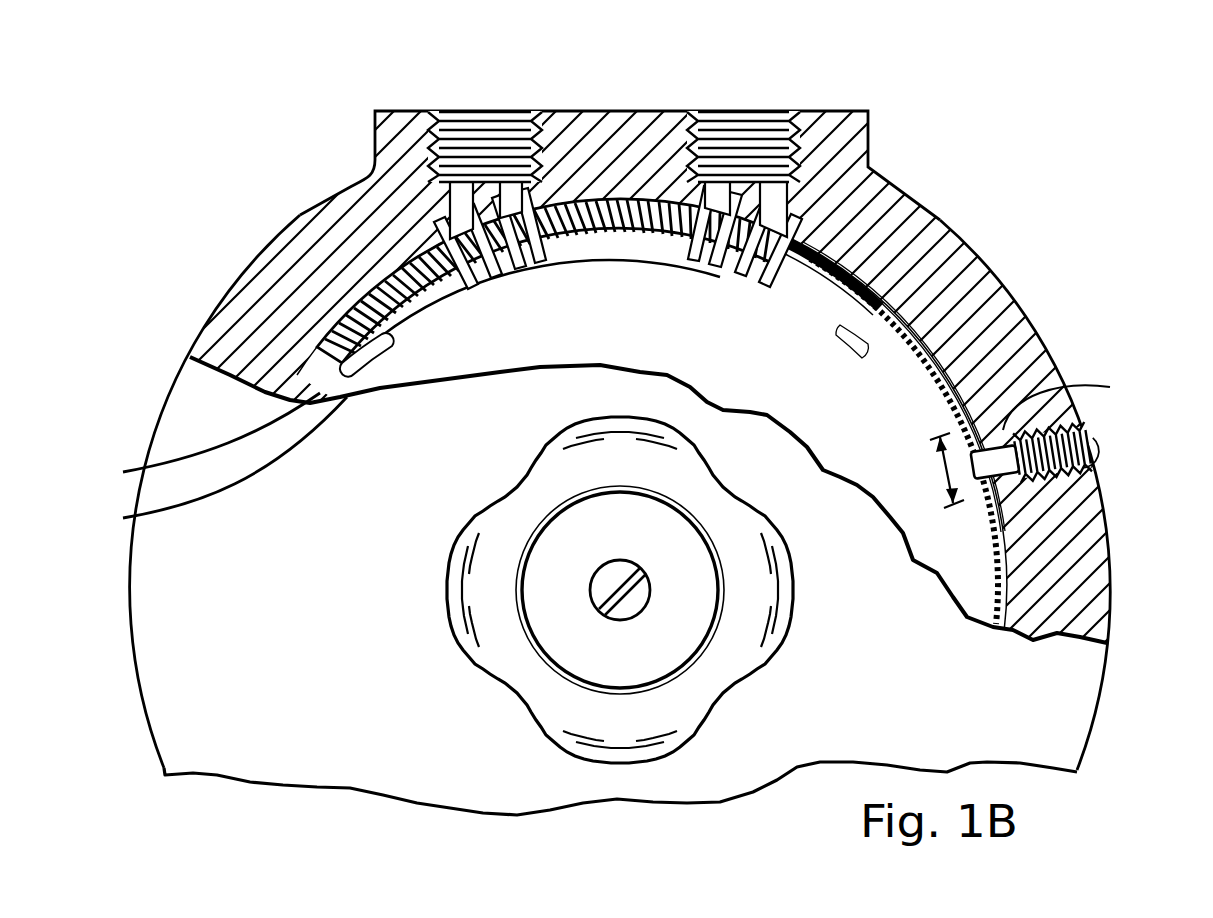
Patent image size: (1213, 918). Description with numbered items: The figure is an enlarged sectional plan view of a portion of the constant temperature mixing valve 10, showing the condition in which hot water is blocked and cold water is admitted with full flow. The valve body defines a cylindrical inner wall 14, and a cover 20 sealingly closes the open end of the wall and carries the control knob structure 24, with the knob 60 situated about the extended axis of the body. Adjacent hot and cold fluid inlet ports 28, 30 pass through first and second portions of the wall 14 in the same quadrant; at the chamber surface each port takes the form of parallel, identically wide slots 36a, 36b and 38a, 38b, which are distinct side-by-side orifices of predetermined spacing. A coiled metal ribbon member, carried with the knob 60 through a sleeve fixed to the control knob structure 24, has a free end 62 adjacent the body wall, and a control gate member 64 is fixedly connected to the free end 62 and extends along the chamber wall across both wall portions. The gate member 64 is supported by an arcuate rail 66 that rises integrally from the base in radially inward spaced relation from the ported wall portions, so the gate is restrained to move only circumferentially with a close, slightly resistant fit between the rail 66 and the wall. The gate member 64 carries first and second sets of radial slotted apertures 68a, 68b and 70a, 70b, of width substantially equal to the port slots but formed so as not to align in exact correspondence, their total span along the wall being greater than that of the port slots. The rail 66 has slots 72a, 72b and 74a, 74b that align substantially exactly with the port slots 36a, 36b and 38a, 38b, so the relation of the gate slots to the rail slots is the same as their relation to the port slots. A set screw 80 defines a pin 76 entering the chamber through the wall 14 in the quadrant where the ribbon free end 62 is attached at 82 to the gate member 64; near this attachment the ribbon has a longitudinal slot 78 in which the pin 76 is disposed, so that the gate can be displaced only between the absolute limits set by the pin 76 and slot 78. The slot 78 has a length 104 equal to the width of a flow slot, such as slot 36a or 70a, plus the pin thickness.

The constant temperature mixing valve 10 is at (1012, 213).
The cylindrical inner wall 14 is at (205, 338).
The cover 20 is at (330, 592).
The control knob structure 24 is at (440, 614).
The hot fluid inlet port 28 is at (462, 108).
The cold fluid inlet port 30 is at (775, 108).
The slot of hot inlet port 36a is at (457, 200).
The slot of hot inlet port 36b is at (520, 196).
The slot of cold inlet port 38a is at (720, 200).
The slot of cold inlet port 38b is at (792, 196).
The knob 60 is at (788, 650).
The free end of ribbon member 62 is at (888, 308).
The control gate member 64 is at (135, 470).
The arcuate rail 66 is at (125, 517).
The slotted aperture of gate member 68a is at (446, 300).
The slotted aperture of gate member 68b is at (520, 275).
The slotted aperture of gate member 70a is at (700, 250).
The slotted aperture of gate member 70b is at (798, 236).
The rail slot 72a is at (497, 282).
The rail slot 72b is at (540, 266).
The rail slot 74a is at (703, 287).
The rail slot 74b is at (763, 266).
The pin 76 is at (1010, 480).
The longitudinal slot of ribbon member 78 is at (1108, 388).
The set screw 80 is at (1095, 470).
The attachment of ribbon to gate member 82 is at (905, 327).
The length of slot 104 is at (942, 478).